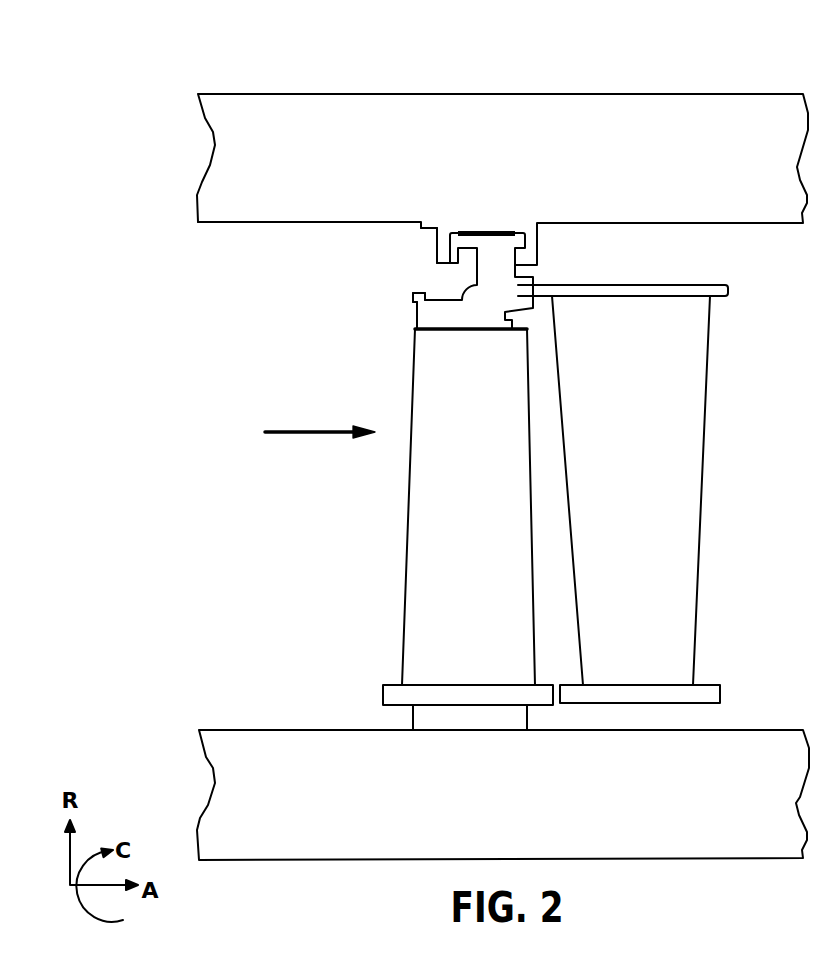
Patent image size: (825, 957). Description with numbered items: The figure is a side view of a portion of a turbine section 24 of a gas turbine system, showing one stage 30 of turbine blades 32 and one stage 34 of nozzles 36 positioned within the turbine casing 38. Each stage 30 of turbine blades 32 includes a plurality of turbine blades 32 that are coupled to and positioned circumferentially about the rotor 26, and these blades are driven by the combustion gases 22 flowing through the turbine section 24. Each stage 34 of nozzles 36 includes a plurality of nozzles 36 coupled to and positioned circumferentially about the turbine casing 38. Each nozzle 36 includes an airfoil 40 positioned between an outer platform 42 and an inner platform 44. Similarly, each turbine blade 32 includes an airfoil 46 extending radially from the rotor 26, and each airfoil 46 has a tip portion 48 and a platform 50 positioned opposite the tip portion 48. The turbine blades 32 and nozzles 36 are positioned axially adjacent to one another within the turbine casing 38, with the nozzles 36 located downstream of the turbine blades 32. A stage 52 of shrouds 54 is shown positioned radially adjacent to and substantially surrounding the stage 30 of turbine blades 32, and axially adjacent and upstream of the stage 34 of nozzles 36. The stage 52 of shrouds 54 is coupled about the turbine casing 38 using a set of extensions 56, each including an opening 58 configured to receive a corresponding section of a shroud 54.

The combustion gases 22 is at (315, 432).
The turbine section 24 is at (590, 72).
The rotor 26 is at (335, 860).
The stage of turbine blades 30 is at (352, 583).
The turbine blade 32 is at (380, 493).
The stage of nozzles 34 is at (733, 471).
The nozzle 36 is at (724, 588).
The turbine casing 38 is at (320, 93).
The airfoil 40 is at (628, 484).
The outer platform 42 is at (731, 291).
The inner platform 44 is at (720, 690).
The airfoil 46 is at (455, 516).
The tip portion 48 is at (385, 343).
The platform 50 is at (383, 693).
The stage of shrouds 52 is at (411, 267).
The shroud 54 is at (413, 318).
The extension 56 is at (437, 231).
The opening 58 is at (473, 190).